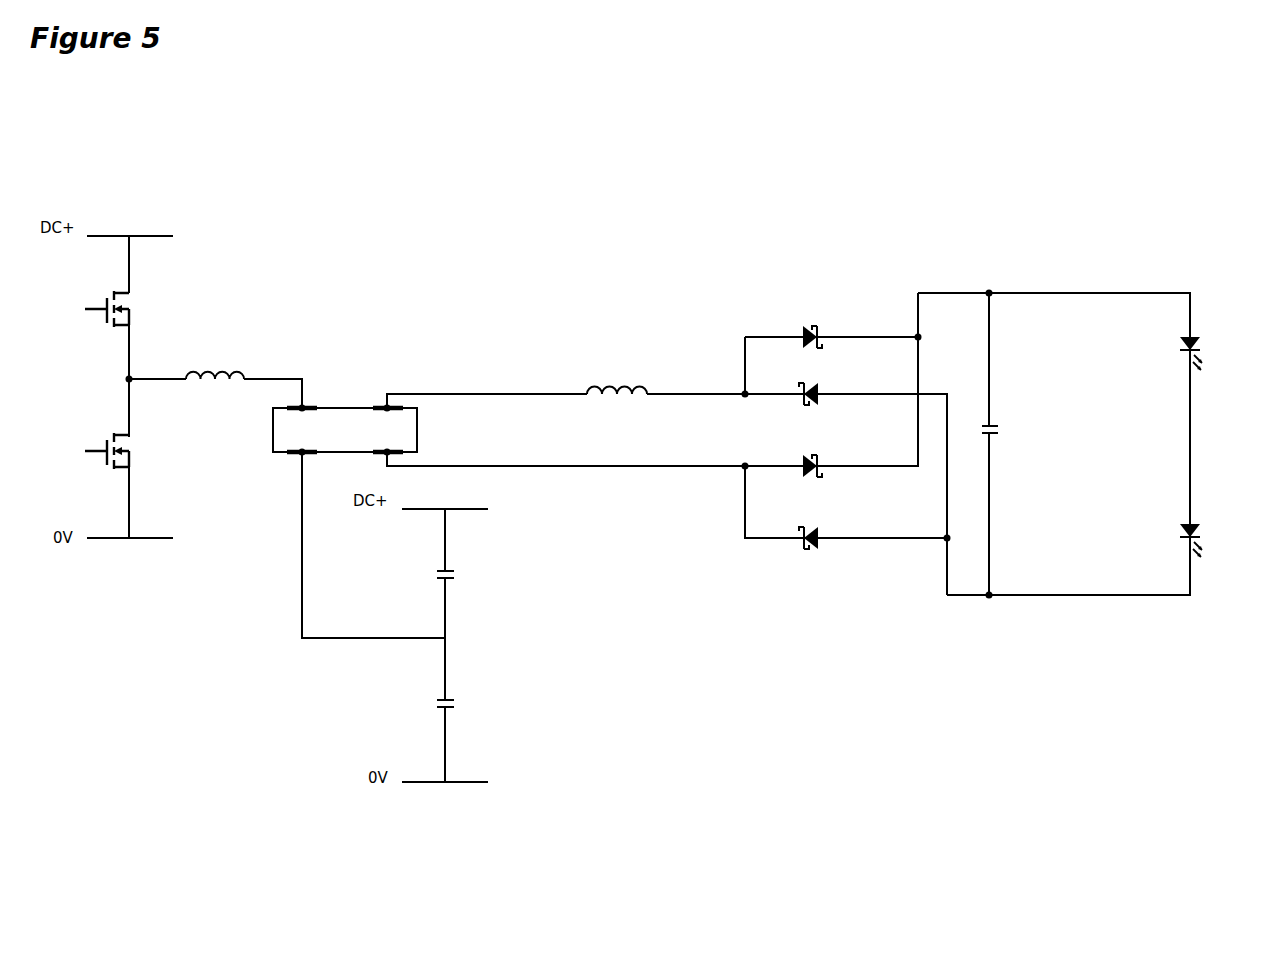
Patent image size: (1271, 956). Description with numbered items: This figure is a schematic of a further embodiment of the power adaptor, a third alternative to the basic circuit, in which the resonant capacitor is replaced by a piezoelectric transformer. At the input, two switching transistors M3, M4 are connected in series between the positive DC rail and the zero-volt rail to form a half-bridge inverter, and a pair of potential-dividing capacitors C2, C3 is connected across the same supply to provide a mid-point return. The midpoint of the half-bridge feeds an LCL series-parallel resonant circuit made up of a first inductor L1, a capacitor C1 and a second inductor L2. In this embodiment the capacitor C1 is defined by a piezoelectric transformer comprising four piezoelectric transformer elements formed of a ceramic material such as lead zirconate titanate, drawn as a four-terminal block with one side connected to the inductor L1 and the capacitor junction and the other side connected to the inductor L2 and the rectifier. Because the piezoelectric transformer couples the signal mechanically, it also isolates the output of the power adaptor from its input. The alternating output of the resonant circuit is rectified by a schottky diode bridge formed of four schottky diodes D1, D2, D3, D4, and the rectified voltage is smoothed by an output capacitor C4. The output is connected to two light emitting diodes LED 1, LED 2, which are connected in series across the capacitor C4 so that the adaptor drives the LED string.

The half-bridge inverter switch M3 is at (102, 302).
The half-bridge inverter switch M4 is at (102, 444).
The series inductor of the LCL resonant circuit L1 is at (215, 361).
The second inductor of the LCL resonant circuit L2 is at (617, 377).
The capacitor of the LCL resonant circuit C1 is at (345, 415).
The potential-dividing capacitor C2 is at (462, 575).
The potential-dividing capacitor C3 is at (462, 704).
The output capacitor C4 is at (1006, 432).
The schottky diode D1 is at (801, 383).
The schottky diode D2 is at (803, 455).
The schottky diode D3 is at (801, 526).
The schottky diode D4 is at (803, 324).
The light emitting diode LED 1 is at (1218, 353).
The light emitting diode LED 2 is at (1217, 534).